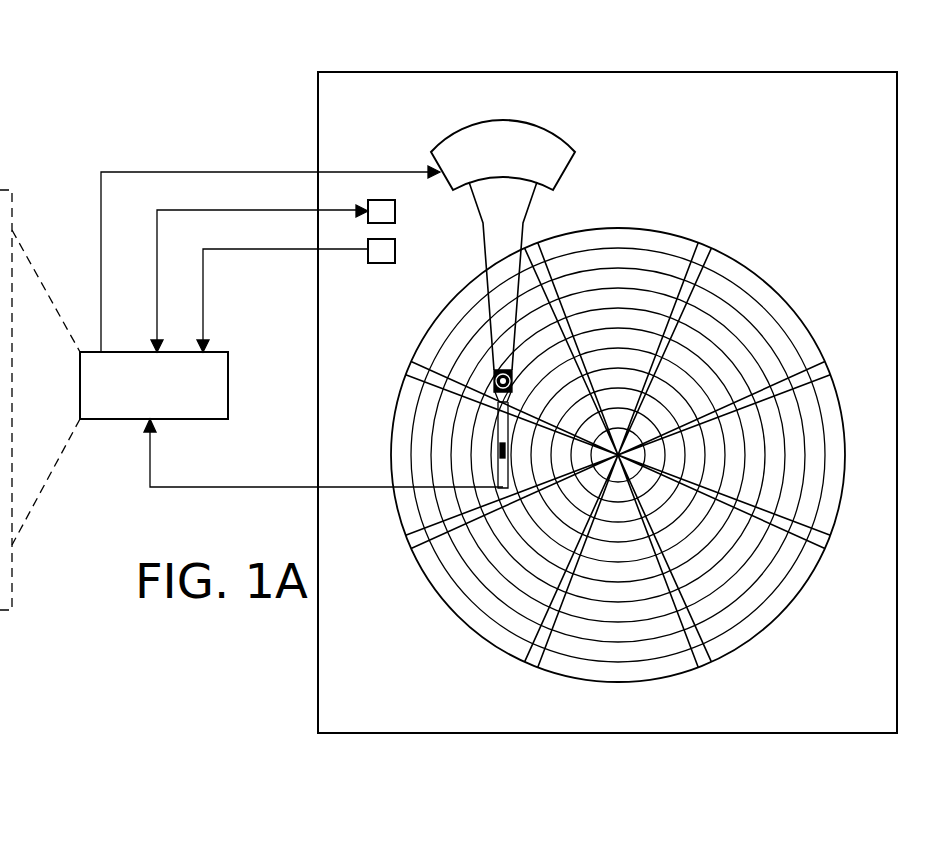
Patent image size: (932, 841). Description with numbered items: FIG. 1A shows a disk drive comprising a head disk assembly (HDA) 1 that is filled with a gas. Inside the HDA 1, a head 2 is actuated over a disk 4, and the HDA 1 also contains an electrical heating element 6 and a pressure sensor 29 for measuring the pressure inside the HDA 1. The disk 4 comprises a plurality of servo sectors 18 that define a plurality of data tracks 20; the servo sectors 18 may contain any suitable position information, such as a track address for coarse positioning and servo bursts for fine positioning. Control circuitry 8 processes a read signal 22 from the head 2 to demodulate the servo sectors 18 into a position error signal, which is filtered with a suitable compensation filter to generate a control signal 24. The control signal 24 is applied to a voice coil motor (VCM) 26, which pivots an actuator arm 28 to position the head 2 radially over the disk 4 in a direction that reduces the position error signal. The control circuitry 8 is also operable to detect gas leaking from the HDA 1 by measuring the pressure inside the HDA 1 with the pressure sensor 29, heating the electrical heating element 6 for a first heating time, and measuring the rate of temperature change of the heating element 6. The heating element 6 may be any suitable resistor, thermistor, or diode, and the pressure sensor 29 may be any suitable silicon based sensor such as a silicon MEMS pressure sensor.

The head disk assembly (HDA) 1 is at (776, 72).
The head 2 is at (510, 452).
The disk 4 is at (775, 281).
The electrical heating element 6 is at (395, 211).
The control circuitry 8 is at (228, 384).
The servo sectors 18 is at (706, 250).
The data tracks 20 is at (628, 219).
The read signal 22 is at (225, 487).
The control signal 24 is at (101, 248).
The voice coil motor (VCM) 26 is at (431, 144).
The actuator arm 28 is at (483, 261).
The pressure sensor 29 is at (381, 263).